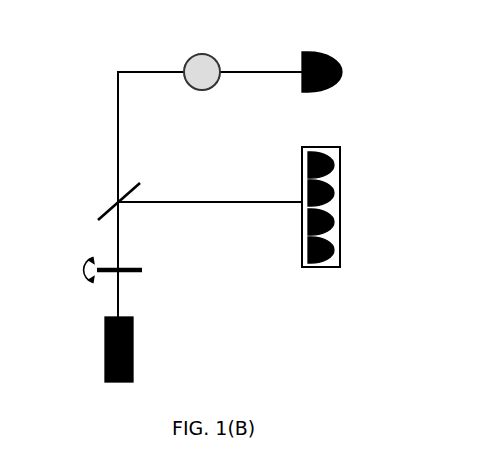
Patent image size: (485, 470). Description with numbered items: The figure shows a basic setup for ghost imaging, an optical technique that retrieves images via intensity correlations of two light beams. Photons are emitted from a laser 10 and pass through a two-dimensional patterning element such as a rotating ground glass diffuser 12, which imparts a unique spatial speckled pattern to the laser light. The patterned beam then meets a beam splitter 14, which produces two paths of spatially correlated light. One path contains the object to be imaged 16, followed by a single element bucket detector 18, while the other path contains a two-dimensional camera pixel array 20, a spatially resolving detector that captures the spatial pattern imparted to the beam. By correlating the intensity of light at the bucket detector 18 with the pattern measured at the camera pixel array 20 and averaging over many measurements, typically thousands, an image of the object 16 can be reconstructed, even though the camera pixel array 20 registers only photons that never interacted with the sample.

The laser 10 is at (96, 349).
The rotating ground glass diffuser 12 is at (149, 275).
The beam splitter 14 is at (123, 204).
The object to be imaged 16 is at (202, 57).
The bucket detector 18 is at (316, 82).
The two-dimensional camera pixel array 20 is at (321, 207).